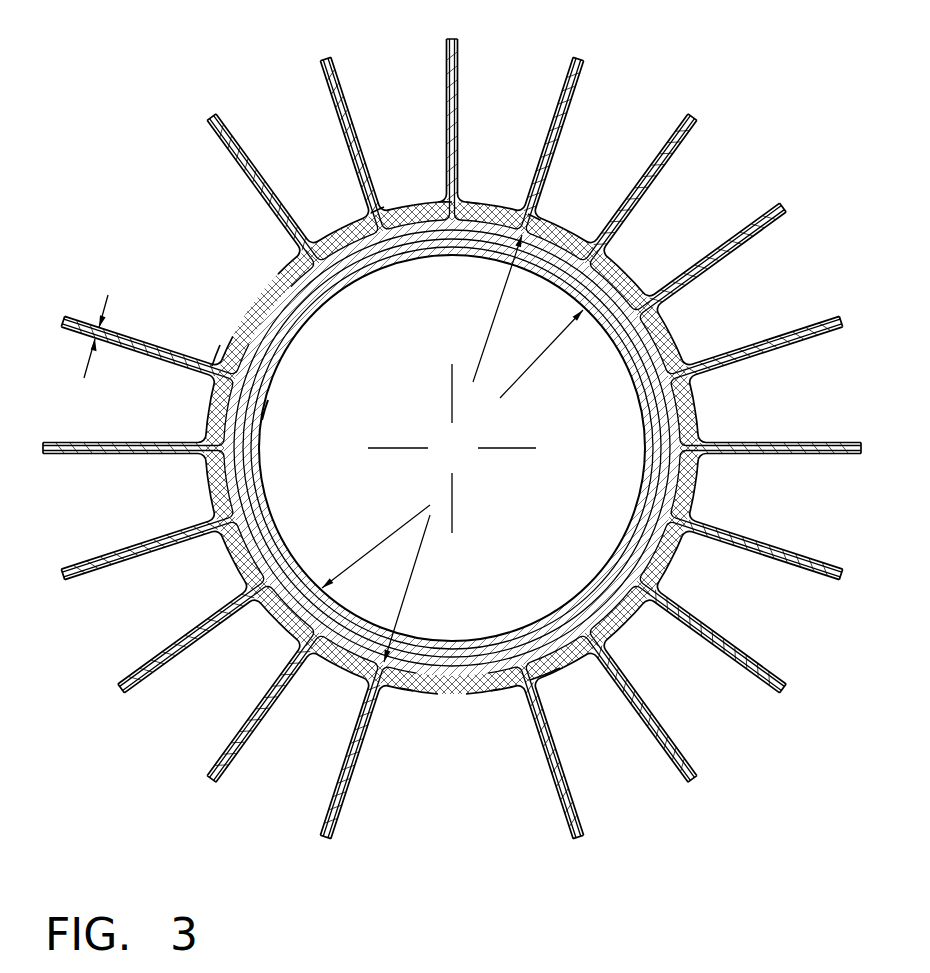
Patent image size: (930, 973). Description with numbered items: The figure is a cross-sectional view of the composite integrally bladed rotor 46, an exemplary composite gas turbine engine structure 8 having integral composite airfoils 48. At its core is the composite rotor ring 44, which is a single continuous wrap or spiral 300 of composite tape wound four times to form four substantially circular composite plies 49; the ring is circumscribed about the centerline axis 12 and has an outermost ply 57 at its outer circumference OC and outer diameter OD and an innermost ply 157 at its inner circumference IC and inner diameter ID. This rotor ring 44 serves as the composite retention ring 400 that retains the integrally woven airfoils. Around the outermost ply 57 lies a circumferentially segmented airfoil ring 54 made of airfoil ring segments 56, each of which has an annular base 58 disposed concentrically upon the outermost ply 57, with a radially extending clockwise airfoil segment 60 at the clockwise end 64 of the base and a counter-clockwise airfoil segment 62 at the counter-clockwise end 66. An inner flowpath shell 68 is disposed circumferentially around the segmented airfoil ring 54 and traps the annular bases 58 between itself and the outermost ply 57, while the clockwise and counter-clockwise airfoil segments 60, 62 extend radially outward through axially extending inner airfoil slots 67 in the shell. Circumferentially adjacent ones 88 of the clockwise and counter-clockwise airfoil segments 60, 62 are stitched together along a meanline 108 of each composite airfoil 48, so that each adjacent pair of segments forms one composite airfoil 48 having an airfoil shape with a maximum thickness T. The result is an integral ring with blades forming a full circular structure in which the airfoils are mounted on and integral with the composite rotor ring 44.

The composite gas turbine engine structure 8 is at (662, 97).
The centerline axis 12 is at (455, 446).
The composite rotor ring 44 is at (623, 362).
The composite integrally bladed rotor 46 is at (177, 768).
The composite airfoil 48 is at (243, 125).
The composite plies 49 is at (446, 254).
The circumferentially segmented airfoil ring 54 is at (485, 687).
The airfoil ring segments 56 is at (415, 688).
The outermost ply 57 is at (378, 208).
The annular base 58 is at (480, 217).
The clockwise airfoil segment 60 is at (447, 75).
The counter-clockwise airfoil segment 62 is at (350, 104).
The clockwise end 64 is at (443, 208).
The counter-clockwise end 66 is at (468, 207).
The inner airfoil slots 67 is at (668, 300).
The inner flowpath shell 68 is at (556, 676).
The circumferentially adjacent ones of the airfoil segments 88 is at (695, 121).
The meanline 108 is at (325, 840).
The innermost ply 157 is at (352, 277).
The continuous wrap or spiral 300 is at (565, 611).
The composite retention ring 400 is at (647, 445).
The maximum thickness T is at (84, 374).
The inner diameter ID is at (363, 548).
The outer diameter OD is at (416, 580).
The inner circumference IC is at (267, 399).
The outer circumference OC is at (217, 366).